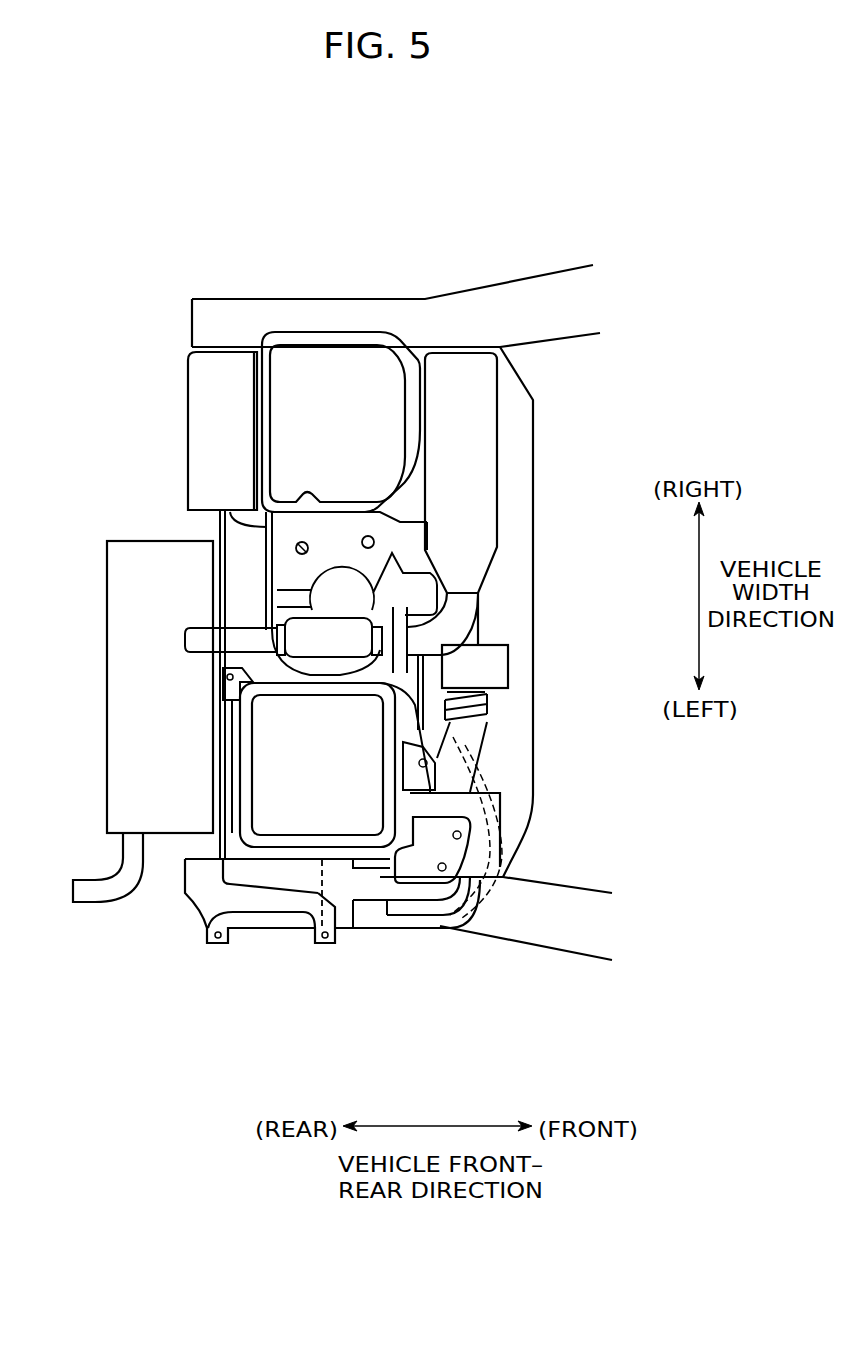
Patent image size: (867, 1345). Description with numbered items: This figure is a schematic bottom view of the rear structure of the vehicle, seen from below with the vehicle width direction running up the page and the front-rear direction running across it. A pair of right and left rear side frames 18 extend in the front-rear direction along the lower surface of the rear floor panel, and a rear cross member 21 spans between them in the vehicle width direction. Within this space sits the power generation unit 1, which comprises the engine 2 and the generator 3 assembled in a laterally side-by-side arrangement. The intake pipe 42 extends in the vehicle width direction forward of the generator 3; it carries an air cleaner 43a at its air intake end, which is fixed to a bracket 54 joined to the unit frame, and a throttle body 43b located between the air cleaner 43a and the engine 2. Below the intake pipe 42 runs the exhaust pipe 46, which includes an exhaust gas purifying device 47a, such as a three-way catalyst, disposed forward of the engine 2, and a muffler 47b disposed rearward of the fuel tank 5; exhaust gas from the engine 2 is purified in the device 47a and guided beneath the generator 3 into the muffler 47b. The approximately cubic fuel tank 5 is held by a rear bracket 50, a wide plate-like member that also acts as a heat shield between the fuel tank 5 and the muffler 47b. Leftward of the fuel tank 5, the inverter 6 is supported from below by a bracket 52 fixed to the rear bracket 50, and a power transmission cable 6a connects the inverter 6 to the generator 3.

The power generation unit 1 is at (268, 436).
The engine 2 is at (294, 371).
The generator 3 is at (296, 542).
The fuel tank 5 is at (347, 810).
The inverter 6 is at (283, 920).
The power transmission cable 6a is at (443, 910).
The rear side frame 18 is at (525, 296).
The rear cross member 21 is at (533, 363).
The intake pipe 42 is at (499, 710).
The air cleaner 43a is at (507, 855).
The throttle body 43b is at (498, 670).
The exhaust pipe 46 is at (480, 608).
The exhaust gas purifying device 47a is at (488, 497).
The muffler 47b is at (112, 712).
The rear bracket 50 is at (225, 775).
The bracket 52 is at (255, 897).
The bracket 54 is at (418, 868).